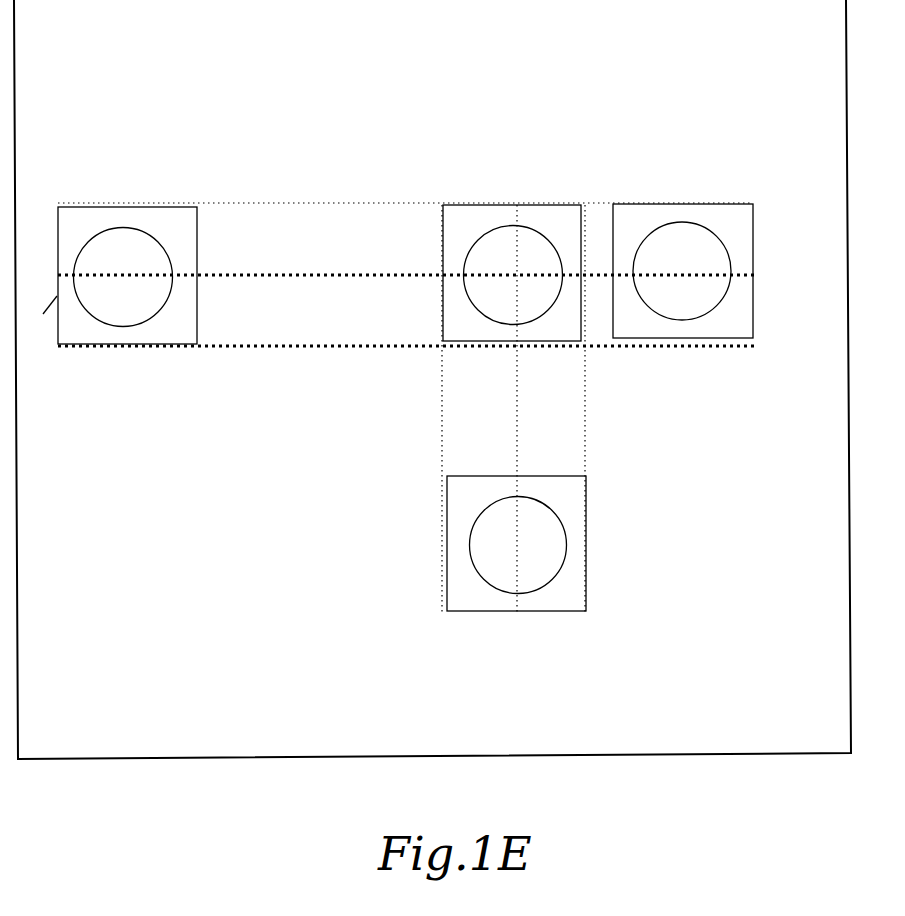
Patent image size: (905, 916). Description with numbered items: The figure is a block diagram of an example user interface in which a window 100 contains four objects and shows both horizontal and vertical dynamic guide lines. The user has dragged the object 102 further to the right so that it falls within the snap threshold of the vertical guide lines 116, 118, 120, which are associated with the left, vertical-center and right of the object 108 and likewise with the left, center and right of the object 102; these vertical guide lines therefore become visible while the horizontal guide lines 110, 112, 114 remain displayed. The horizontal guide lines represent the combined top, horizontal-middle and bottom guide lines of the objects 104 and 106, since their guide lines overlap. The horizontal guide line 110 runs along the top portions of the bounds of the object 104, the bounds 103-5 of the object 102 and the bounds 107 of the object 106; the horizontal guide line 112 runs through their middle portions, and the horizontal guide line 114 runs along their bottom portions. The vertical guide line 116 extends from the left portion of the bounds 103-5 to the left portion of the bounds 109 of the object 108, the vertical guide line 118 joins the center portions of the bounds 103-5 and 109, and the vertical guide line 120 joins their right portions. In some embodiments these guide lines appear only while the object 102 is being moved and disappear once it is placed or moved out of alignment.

The window 100 is at (135, 759).
The object 102 is at (547, 238).
The bounds for the object 102 103-5 is at (443, 312).
The object 104 is at (160, 296).
The object 106 is at (682, 320).
The bounds for the object 106 107 is at (753, 295).
The object 108 is at (570, 548).
The bounds for the object 108 109 is at (543, 611).
The horizontal guide line 110 is at (288, 204).
The horizontal guide line 112 is at (285, 276).
The horizontal guide line 114 is at (302, 347).
The vertical guide line 116 is at (441, 400).
The vertical guide line 118 is at (517, 395).
The vertical guide line 120 is at (585, 405).